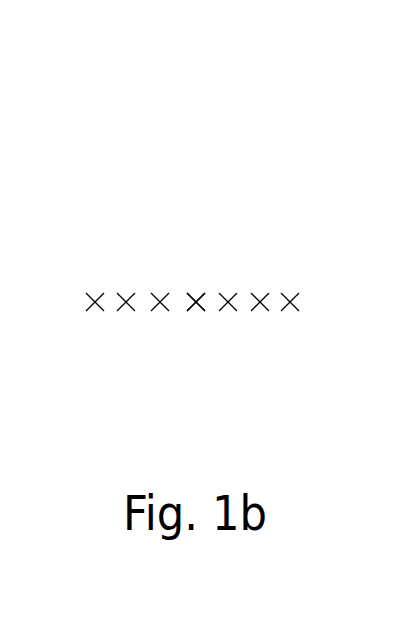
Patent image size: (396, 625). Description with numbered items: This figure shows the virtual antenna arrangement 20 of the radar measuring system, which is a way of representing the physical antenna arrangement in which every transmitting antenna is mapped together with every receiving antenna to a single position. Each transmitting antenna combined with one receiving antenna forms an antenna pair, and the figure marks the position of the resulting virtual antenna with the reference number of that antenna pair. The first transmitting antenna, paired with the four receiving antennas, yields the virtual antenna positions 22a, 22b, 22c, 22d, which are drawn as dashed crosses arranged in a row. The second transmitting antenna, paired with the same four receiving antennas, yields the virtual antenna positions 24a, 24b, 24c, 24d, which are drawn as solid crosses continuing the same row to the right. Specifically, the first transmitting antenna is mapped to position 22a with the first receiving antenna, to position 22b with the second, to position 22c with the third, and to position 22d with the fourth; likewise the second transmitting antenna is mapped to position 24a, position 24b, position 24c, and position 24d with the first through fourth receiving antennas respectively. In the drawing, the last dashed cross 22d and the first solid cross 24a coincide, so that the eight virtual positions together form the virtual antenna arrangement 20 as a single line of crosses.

The virtual antenna arrangement 20 is at (289, 149).
The position of virtual antenna 22a is at (95, 306).
The position of virtual antenna 22b is at (127, 306).
The position of virtual antenna 22c is at (160, 308).
The position of virtual antenna 22d is at (187, 311).
The position of virtual antenna 24a is at (204, 291).
The position of virtual antenna 24b is at (232, 292).
The position of virtual antenna 24c is at (260, 292).
The position of virtual antenna 24d is at (288, 292).